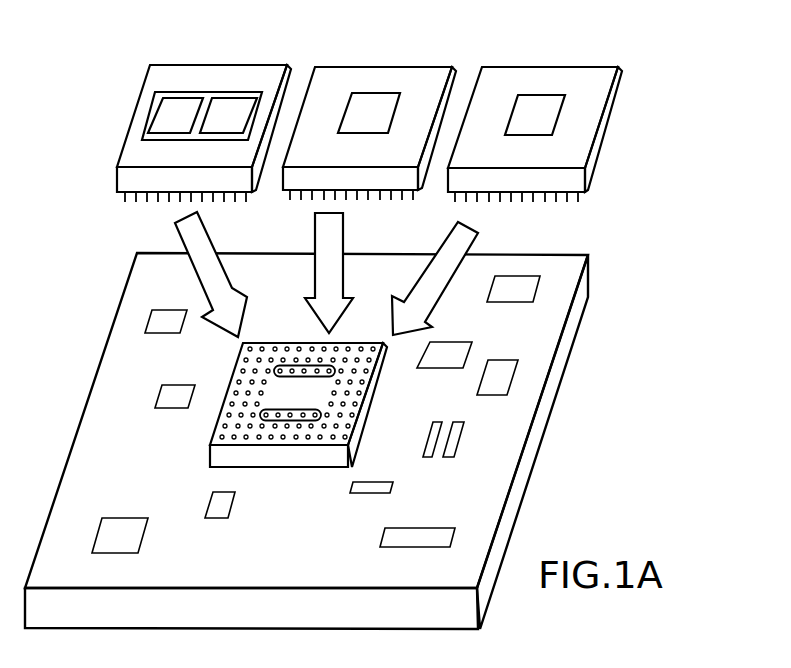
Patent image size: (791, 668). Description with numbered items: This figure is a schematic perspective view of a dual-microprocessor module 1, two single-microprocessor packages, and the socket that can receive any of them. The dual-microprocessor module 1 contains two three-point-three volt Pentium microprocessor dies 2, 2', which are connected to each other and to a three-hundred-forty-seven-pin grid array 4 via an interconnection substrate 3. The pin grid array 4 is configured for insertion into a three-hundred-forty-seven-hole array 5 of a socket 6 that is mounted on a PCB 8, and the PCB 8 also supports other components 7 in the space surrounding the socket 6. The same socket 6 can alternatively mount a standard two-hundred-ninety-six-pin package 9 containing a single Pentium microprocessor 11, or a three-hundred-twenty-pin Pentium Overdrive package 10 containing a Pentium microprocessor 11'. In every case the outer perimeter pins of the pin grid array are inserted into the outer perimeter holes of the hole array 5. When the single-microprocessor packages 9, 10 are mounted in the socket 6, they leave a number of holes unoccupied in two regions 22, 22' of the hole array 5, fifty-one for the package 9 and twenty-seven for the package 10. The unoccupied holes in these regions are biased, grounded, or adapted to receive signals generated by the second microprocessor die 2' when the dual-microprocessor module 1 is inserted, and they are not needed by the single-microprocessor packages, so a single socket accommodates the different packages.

The dual-microprocessor module 1 is at (188, 129).
The microprocessor die 2 is at (175, 115).
The second microprocessor die 2' is at (228, 115).
The interconnection substrate 3 is at (210, 96).
The pin grid array 4 is at (123, 195).
The hole array 5 is at (352, 407).
The socket 6 is at (204, 451).
The other components 7 is at (517, 275).
The PCB 8 is at (78, 457).
The Pentium package 9 is at (369, 113).
The Pentium Overdrive package 10 is at (535, 114).
The Pentium microprocessor 11 is at (369, 113).
The Pentium microprocessor 11' is at (535, 115).
The region of unoccupied holes 22 is at (299, 337).
The second region of unoccupied holes 22' is at (291, 459).